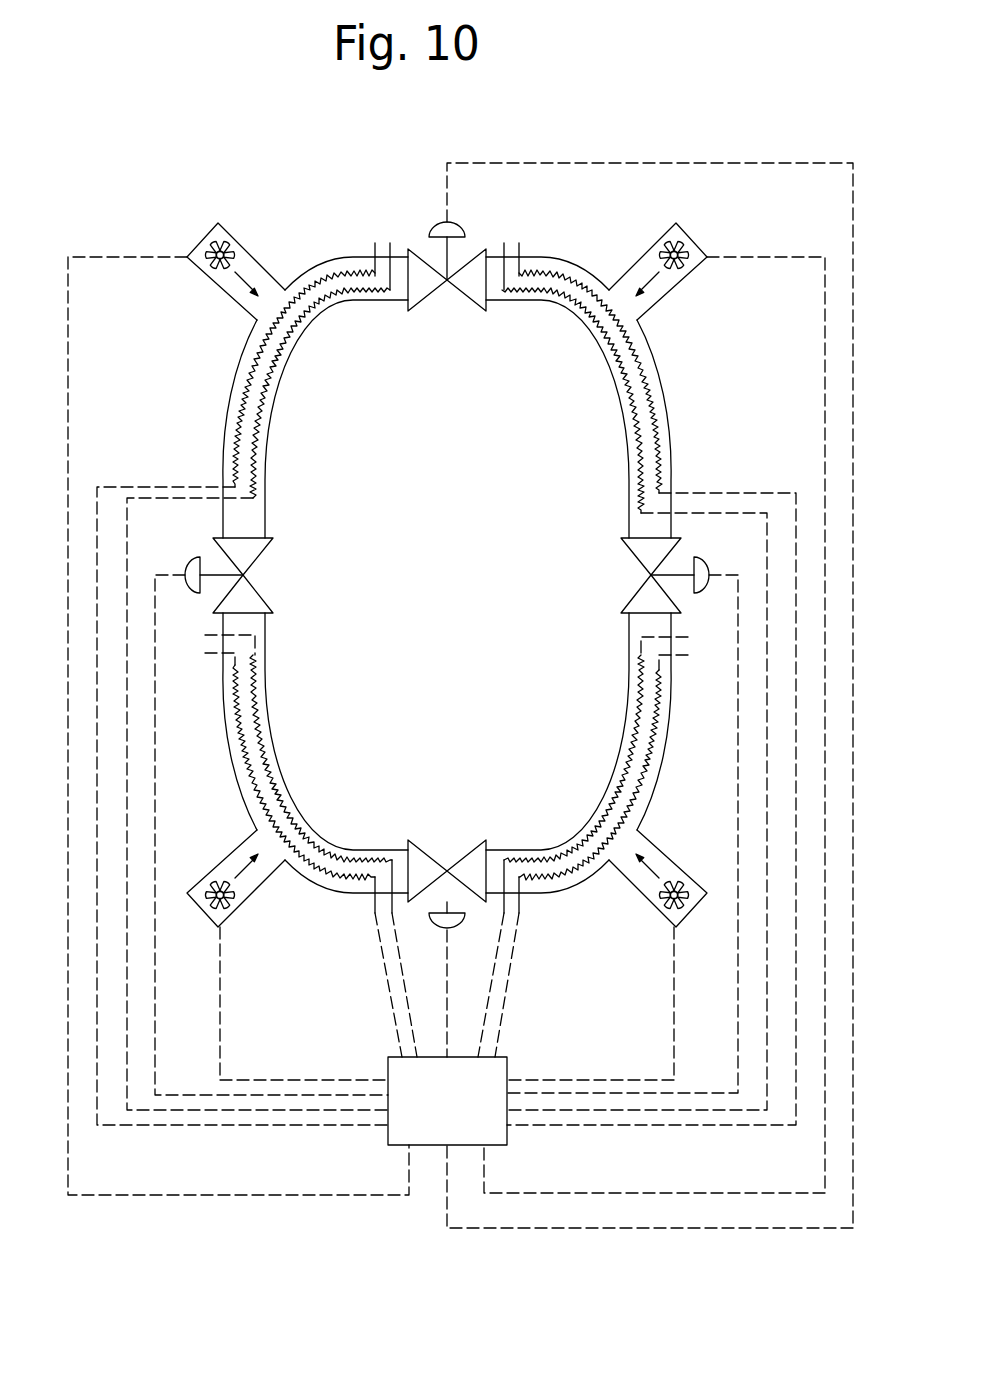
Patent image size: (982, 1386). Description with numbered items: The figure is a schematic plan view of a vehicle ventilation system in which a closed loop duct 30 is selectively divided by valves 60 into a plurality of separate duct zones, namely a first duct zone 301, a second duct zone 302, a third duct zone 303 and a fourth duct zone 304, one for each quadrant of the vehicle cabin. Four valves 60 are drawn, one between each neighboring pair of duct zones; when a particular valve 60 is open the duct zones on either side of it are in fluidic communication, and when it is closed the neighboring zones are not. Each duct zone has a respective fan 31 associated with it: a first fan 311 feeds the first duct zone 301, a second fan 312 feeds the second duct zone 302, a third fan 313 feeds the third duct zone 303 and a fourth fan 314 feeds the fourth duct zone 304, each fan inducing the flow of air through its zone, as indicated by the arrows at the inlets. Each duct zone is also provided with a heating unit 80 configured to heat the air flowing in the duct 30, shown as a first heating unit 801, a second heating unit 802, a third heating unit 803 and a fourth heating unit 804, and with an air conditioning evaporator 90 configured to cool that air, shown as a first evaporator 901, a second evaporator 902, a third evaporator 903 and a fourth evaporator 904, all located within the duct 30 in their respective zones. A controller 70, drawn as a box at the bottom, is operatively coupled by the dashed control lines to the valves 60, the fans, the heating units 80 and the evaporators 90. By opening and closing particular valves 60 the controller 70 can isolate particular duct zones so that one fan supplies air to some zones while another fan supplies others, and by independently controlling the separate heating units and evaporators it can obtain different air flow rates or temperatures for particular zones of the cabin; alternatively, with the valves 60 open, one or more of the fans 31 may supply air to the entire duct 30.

The duct 30 is at (447, 575).
The first duct zone 301 is at (265, 487).
The second duct zone 302 is at (632, 467).
The third duct zone 303 is at (610, 787).
The fourth duct zone 304 is at (278, 783).
The fan 31 is at (474, 583).
The first fan 311 is at (228, 233).
The second fan 312 is at (687, 240).
The third fan 313 is at (667, 917).
The fourth fan 314 is at (228, 917).
The valve 60 is at (433, 290).
The controller 70 is at (463, 1113).
The heating unit 80 is at (449, 536).
The first heating unit 801 is at (375, 243).
The second heating unit 802 is at (519, 243).
The third heating unit 803 is at (519, 897).
The fourth heating unit 804 is at (375, 897).
The air conditioning evaporator 90 is at (447, 508).
The first evaporator 901 is at (392, 243).
The second evaporator 902 is at (504, 243).
The third evaporator 903 is at (502, 848).
The fourth evaporator 904 is at (397, 848).